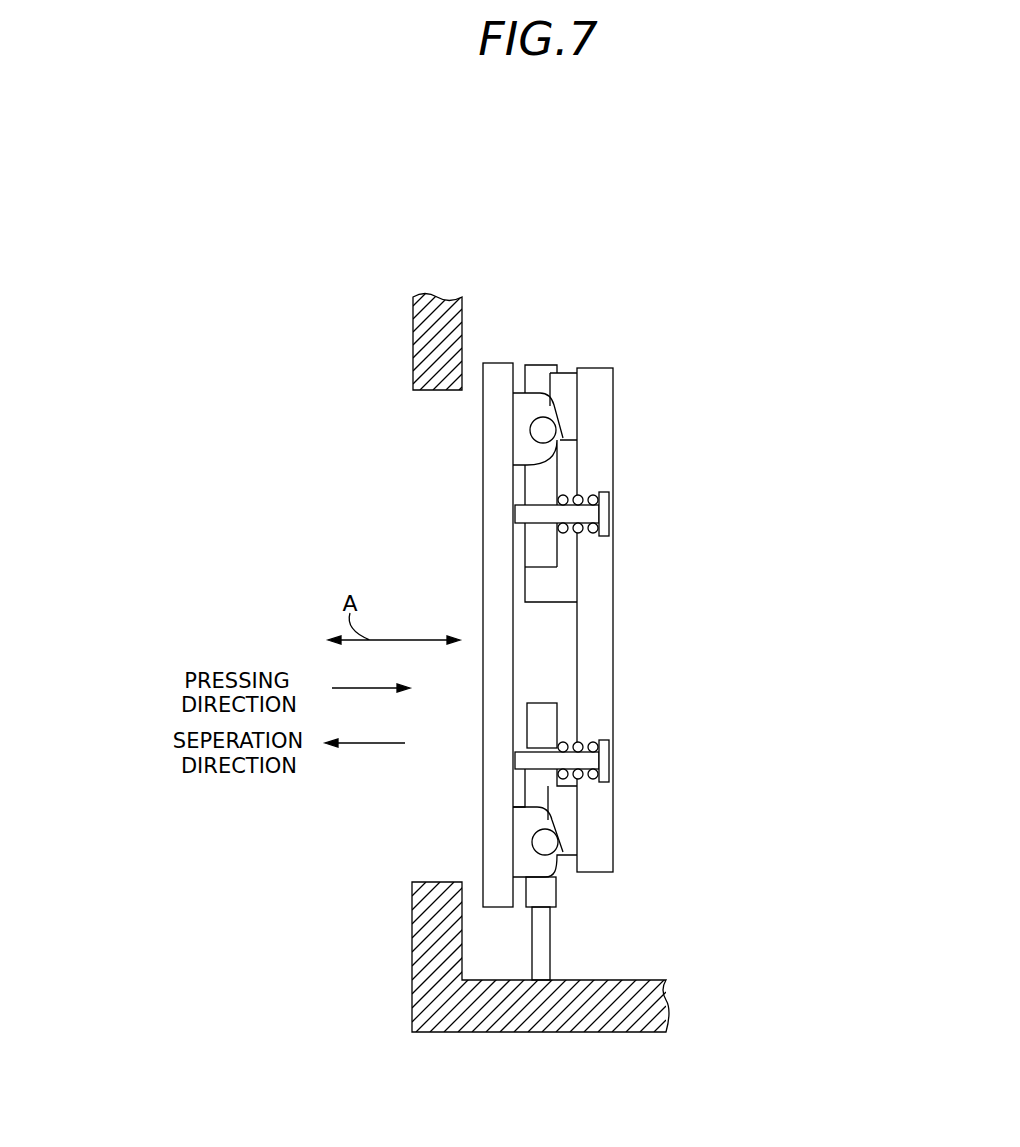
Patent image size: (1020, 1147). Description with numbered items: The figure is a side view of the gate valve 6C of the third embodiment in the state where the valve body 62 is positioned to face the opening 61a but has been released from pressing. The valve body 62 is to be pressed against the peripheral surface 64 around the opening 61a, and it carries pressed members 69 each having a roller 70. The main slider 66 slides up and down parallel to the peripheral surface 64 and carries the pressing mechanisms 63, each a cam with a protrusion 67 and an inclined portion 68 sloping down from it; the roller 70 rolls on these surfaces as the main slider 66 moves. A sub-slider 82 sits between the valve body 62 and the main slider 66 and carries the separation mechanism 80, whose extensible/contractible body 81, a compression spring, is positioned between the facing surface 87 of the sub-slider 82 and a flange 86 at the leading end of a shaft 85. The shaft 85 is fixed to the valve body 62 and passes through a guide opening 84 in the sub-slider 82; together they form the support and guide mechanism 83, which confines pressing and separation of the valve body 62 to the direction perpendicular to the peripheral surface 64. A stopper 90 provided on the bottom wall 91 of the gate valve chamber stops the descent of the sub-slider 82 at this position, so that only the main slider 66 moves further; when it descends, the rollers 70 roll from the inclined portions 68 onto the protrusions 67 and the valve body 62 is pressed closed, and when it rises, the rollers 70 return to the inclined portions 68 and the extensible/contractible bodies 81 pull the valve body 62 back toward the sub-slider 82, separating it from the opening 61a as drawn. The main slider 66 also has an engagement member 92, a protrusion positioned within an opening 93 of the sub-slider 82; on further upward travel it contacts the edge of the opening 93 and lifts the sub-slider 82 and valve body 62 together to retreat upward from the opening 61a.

The gate valve 6C is at (537, 220).
The opening 61a is at (432, 392).
The valve body 62 is at (498, 900).
The pressing mechanism 63 is at (572, 365).
The peripheral surface 64 is at (468, 298).
The main slider 66 is at (600, 633).
The protrusion 67 is at (545, 377).
The inclined portion 68 is at (566, 432).
The pressed member 69 is at (521, 466).
The roller 70 is at (543, 430).
The separation mechanism 80 is at (611, 502).
The extensible/contractible body 81 is at (578, 532).
The sub-slider 82 is at (556, 888).
The support and guide mechanism 83 is at (512, 524).
The guide opening 84 is at (540, 532).
The shaft 85 is at (518, 514).
The flange 86 is at (605, 525).
The facing surface 87 is at (562, 558).
The stopper 90 is at (545, 955).
The bottom wall 91 is at (658, 968).
The engagement member 92 is at (567, 605).
The opening 93 is at (536, 607).